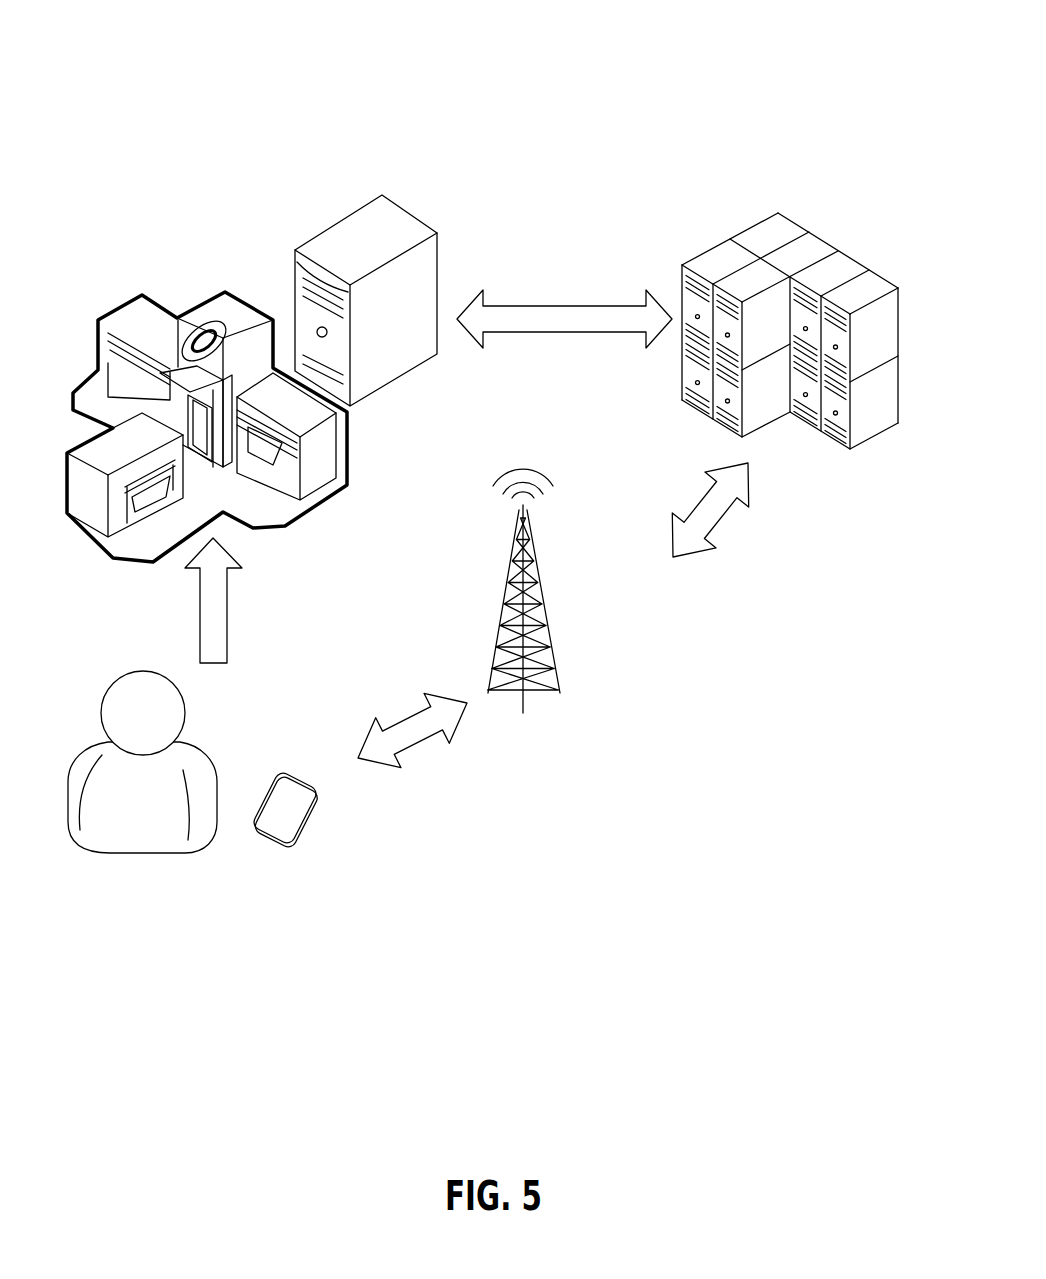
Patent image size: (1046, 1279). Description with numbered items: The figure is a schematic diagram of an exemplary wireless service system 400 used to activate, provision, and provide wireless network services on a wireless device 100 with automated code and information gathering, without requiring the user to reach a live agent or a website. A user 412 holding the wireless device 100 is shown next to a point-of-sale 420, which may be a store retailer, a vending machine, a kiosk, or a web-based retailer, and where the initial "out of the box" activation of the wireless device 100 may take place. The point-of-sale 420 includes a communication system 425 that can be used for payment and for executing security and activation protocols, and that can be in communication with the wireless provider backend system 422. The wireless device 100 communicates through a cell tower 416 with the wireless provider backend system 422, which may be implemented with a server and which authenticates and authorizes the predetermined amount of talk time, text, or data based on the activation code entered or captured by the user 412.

The point-of-sale 420 is at (207, 86).
The communication system 425 is at (330, 243).
The wireless provider backend system 422 is at (907, 373).
The cell tower 416 is at (540, 588).
The user 412 is at (82, 753).
The wireless device 100 is at (282, 763).
The wireless service system 400 is at (695, 845).